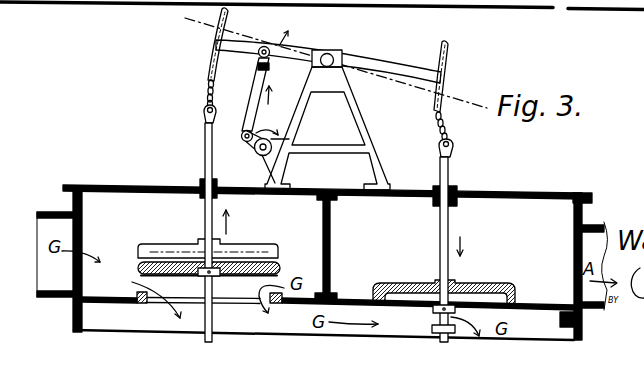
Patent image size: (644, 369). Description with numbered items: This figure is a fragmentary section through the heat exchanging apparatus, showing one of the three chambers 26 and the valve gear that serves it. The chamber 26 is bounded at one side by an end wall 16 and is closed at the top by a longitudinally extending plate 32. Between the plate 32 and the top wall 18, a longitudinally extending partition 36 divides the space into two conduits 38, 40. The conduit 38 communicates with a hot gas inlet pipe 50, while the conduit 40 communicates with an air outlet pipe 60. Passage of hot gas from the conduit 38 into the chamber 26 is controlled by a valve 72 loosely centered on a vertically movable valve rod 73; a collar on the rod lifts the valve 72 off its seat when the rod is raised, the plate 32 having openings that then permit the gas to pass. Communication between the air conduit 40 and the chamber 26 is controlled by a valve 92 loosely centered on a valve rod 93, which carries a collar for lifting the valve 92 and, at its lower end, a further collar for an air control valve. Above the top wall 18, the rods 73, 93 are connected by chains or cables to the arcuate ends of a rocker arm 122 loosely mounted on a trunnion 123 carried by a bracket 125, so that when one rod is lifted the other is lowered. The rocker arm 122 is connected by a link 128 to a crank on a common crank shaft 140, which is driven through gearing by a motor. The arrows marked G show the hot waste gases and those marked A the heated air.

The end wall 16 is at (556, 7).
The top wall 18 is at (128, 188).
The chamber 26 is at (574, 331).
The plate 32 is at (111, 300).
The partition 36 is at (331, 250).
The conduit 38 is at (258, 221).
The conduit 40 is at (426, 233).
The hot gas inlet pipe 50 is at (46, 210).
The air outlet pipe 60 is at (598, 228).
The valve 72 is at (272, 277).
The valve rod 73 is at (204, 222).
The valve 92 is at (404, 289).
The valve rod 93 is at (448, 233).
The rocker arm 122 is at (392, 66).
The trunnion 123 is at (329, 53).
The bracket 125 is at (328, 147).
The link 128 is at (261, 96).
The crank shaft 140 is at (267, 153).